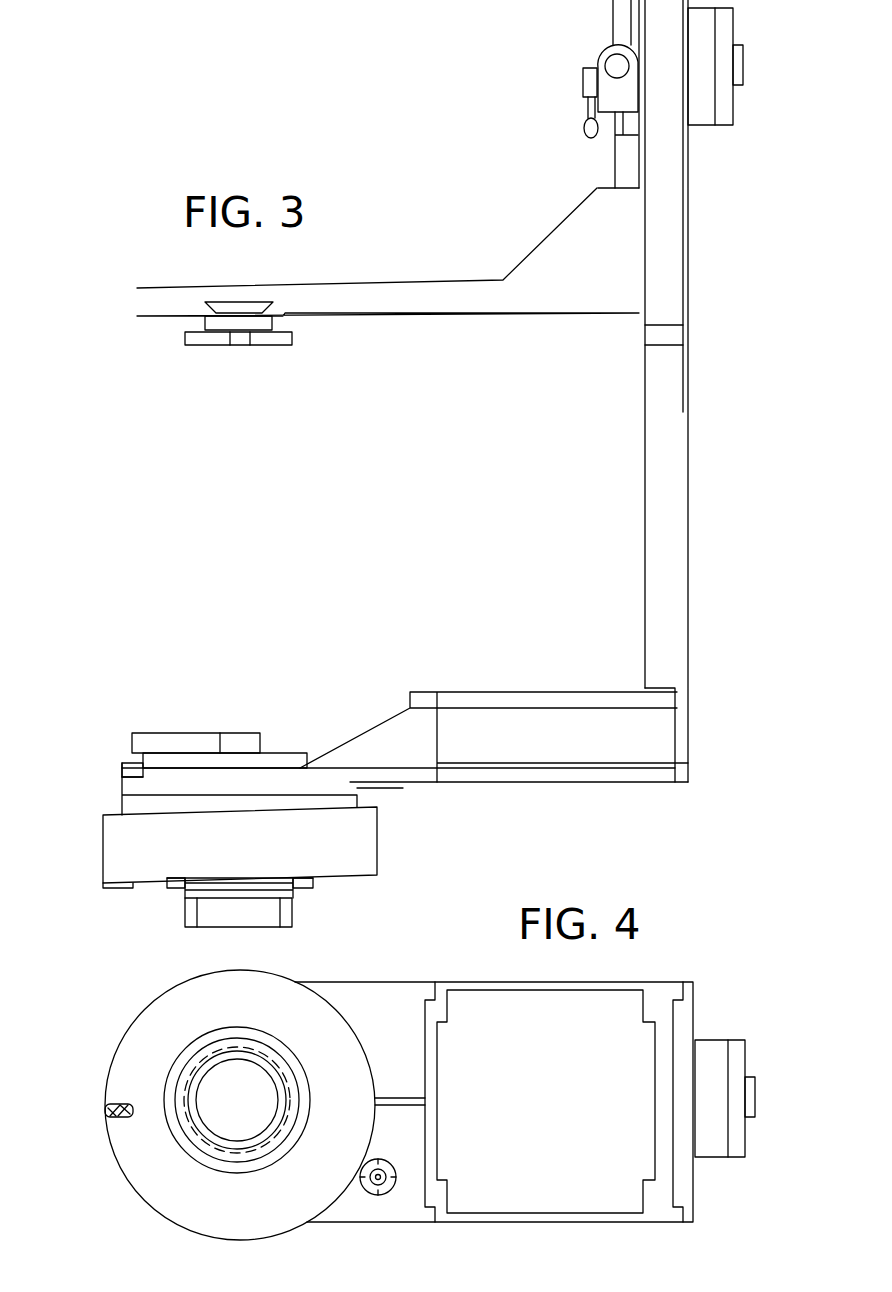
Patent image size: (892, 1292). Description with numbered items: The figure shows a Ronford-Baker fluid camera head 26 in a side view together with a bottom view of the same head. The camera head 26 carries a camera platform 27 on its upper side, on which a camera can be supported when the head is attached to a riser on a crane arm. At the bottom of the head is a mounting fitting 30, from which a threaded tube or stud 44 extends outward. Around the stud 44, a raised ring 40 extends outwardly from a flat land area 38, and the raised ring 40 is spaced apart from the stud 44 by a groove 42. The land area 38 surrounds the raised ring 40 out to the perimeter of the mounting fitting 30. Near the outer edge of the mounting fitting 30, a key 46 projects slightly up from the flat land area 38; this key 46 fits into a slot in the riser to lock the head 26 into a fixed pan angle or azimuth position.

In FIG. 3, the camera head 26 is at (708, 541).
In FIG. 3, the camera platform 27 is at (370, 305).
In FIG. 3, the mounting fitting 30 is at (363, 829).
In FIG. 3, the land area 38 is at (153, 887).
In FIG. 4, the land area 38 is at (182, 1030).
In FIG. 3, the raised ring 40 is at (303, 882).
In FIG. 4, the raised ring 40 is at (187, 1157).
In FIG. 4, the groove 42 is at (180, 1093).
In FIG. 3, the threaded stud 44 is at (267, 917).
In FIG. 4, the threaded stud 44 is at (190, 1077).
In FIG. 3, the key 46 is at (120, 888).
In FIG. 4, the key 46 is at (122, 1117).